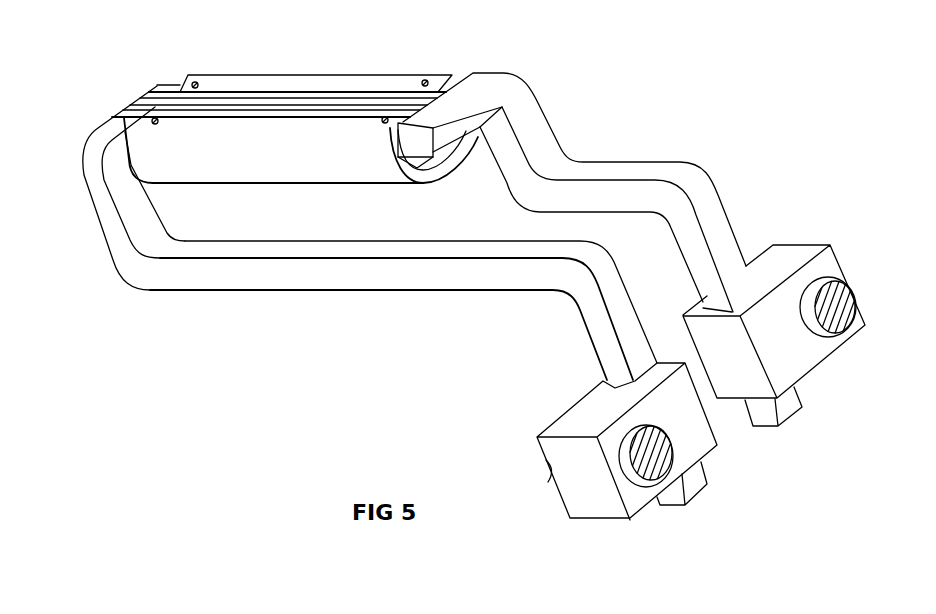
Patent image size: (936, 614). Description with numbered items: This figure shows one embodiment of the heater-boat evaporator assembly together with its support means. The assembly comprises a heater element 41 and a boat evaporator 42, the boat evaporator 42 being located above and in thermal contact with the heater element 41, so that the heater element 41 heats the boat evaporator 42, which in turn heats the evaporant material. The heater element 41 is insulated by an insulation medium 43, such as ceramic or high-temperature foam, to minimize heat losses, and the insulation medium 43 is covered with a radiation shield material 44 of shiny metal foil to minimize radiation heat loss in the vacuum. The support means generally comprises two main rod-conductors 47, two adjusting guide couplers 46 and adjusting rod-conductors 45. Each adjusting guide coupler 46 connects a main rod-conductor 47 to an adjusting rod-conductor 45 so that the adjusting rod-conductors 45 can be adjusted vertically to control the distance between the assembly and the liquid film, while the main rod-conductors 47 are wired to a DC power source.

The heater element 41 is at (295, 105).
The boat evaporator 42 is at (275, 68).
The insulation medium 43 is at (293, 62).
The radiation shield material 44 is at (304, 59).
The adjusting rod-conductor 45 is at (414, 226).
The adjusting guide coupler 46 is at (701, 337).
The main rod-conductor 47 is at (752, 347).